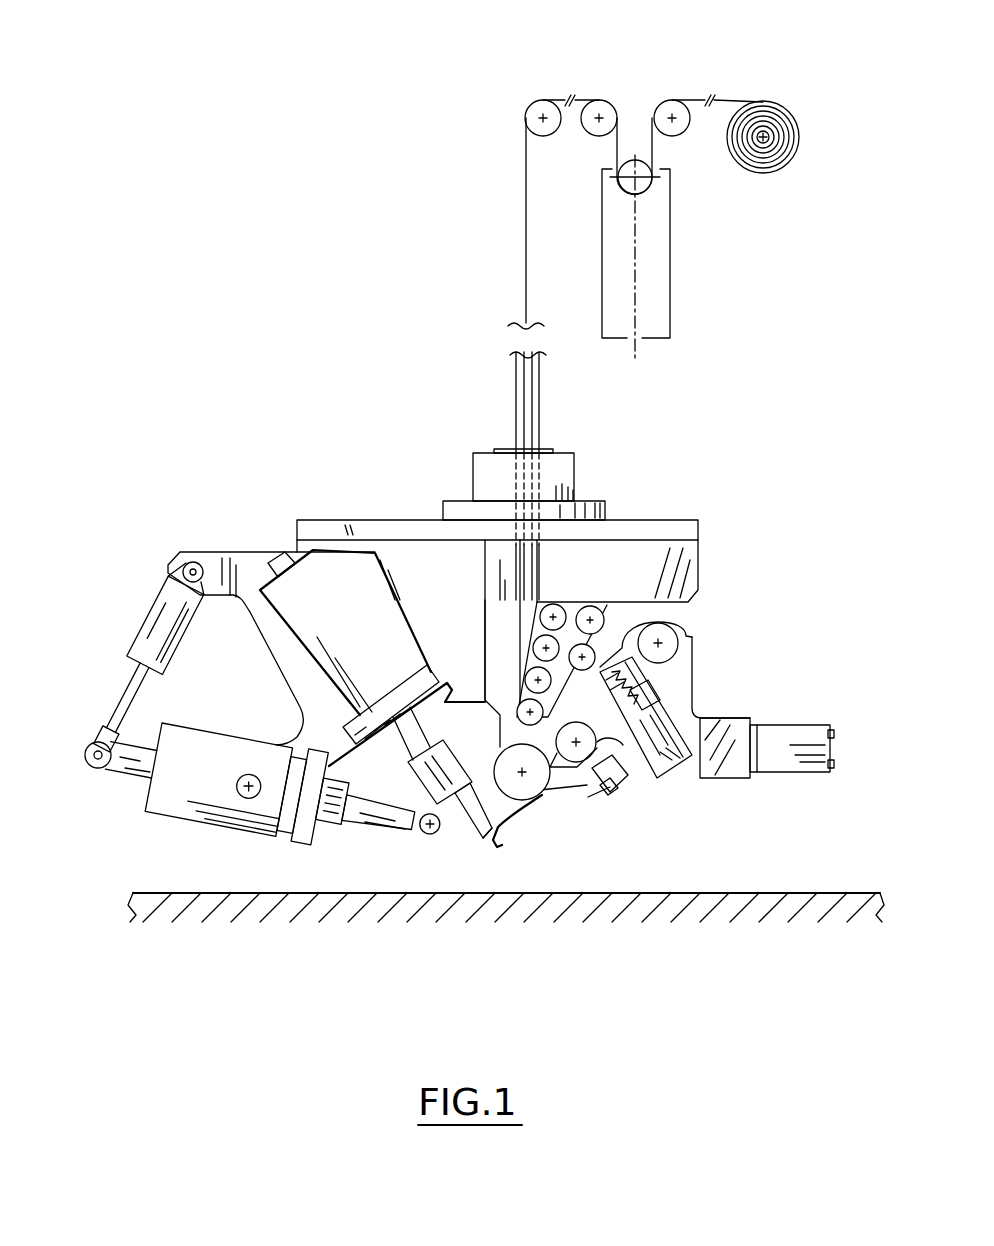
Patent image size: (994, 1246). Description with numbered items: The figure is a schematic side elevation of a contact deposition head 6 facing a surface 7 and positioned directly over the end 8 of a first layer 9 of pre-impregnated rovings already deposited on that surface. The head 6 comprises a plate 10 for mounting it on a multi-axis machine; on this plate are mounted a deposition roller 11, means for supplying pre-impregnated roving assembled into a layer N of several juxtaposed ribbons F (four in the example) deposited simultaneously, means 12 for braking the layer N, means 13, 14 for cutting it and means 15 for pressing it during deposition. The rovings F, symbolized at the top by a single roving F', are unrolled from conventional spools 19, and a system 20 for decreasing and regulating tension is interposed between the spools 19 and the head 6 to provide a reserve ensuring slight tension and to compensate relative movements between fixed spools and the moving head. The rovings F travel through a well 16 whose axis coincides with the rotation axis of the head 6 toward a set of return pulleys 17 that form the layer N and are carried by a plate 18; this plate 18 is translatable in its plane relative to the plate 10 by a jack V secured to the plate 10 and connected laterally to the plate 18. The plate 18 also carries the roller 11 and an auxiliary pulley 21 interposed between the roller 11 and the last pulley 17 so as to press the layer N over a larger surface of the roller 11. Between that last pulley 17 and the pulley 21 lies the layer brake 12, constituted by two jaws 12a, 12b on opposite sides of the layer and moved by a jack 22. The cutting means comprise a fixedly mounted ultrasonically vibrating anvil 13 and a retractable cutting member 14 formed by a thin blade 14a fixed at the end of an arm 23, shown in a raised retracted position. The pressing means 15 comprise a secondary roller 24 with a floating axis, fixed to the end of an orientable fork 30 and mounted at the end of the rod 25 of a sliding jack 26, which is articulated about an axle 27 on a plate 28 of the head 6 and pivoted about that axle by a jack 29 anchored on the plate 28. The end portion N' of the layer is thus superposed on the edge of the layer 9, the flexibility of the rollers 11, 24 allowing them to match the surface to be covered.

The contact deposition head 6 is at (805, 620).
The surface 7 is at (237, 882).
The end of first layer 8 is at (400, 893).
The first layer of pre-impregnated rovings 9 is at (745, 893).
The plate 10 is at (315, 520).
The deposition roller 11 is at (535, 786).
The means for breaking the layer 12 is at (692, 700).
The jaw 12a is at (680, 700).
The jaw 12b is at (600, 618).
The ultrasonically vibrating anvil 13 is at (468, 835).
The cutting member 14 is at (632, 812).
The thin blade 14a is at (588, 797).
The pressing means 15 is at (255, 850).
The well 16 is at (568, 467).
The return pulleys 17 is at (538, 680).
The plate 18 is at (497, 712).
The spools 19 is at (799, 99).
The tension decreasing and regulating system 20 is at (686, 272).
The auxiliary pulley 21 is at (623, 745).
The jack 22 is at (662, 747).
The arm 23 is at (567, 773).
The secondary roller 24 is at (424, 828).
The rod 25 is at (285, 850).
The sliding jack 26 is at (150, 785).
The axle 27 is at (246, 798).
The plate 28 is at (270, 637).
The jack 29 is at (128, 625).
The orientable fork 30 is at (362, 823).
The rovings / ribbons F is at (499, 476).
The single roving F' is at (611, 212).
The jack V is at (490, 558).
The layer N is at (576, 719).
The end portion of the layer N' is at (478, 858).